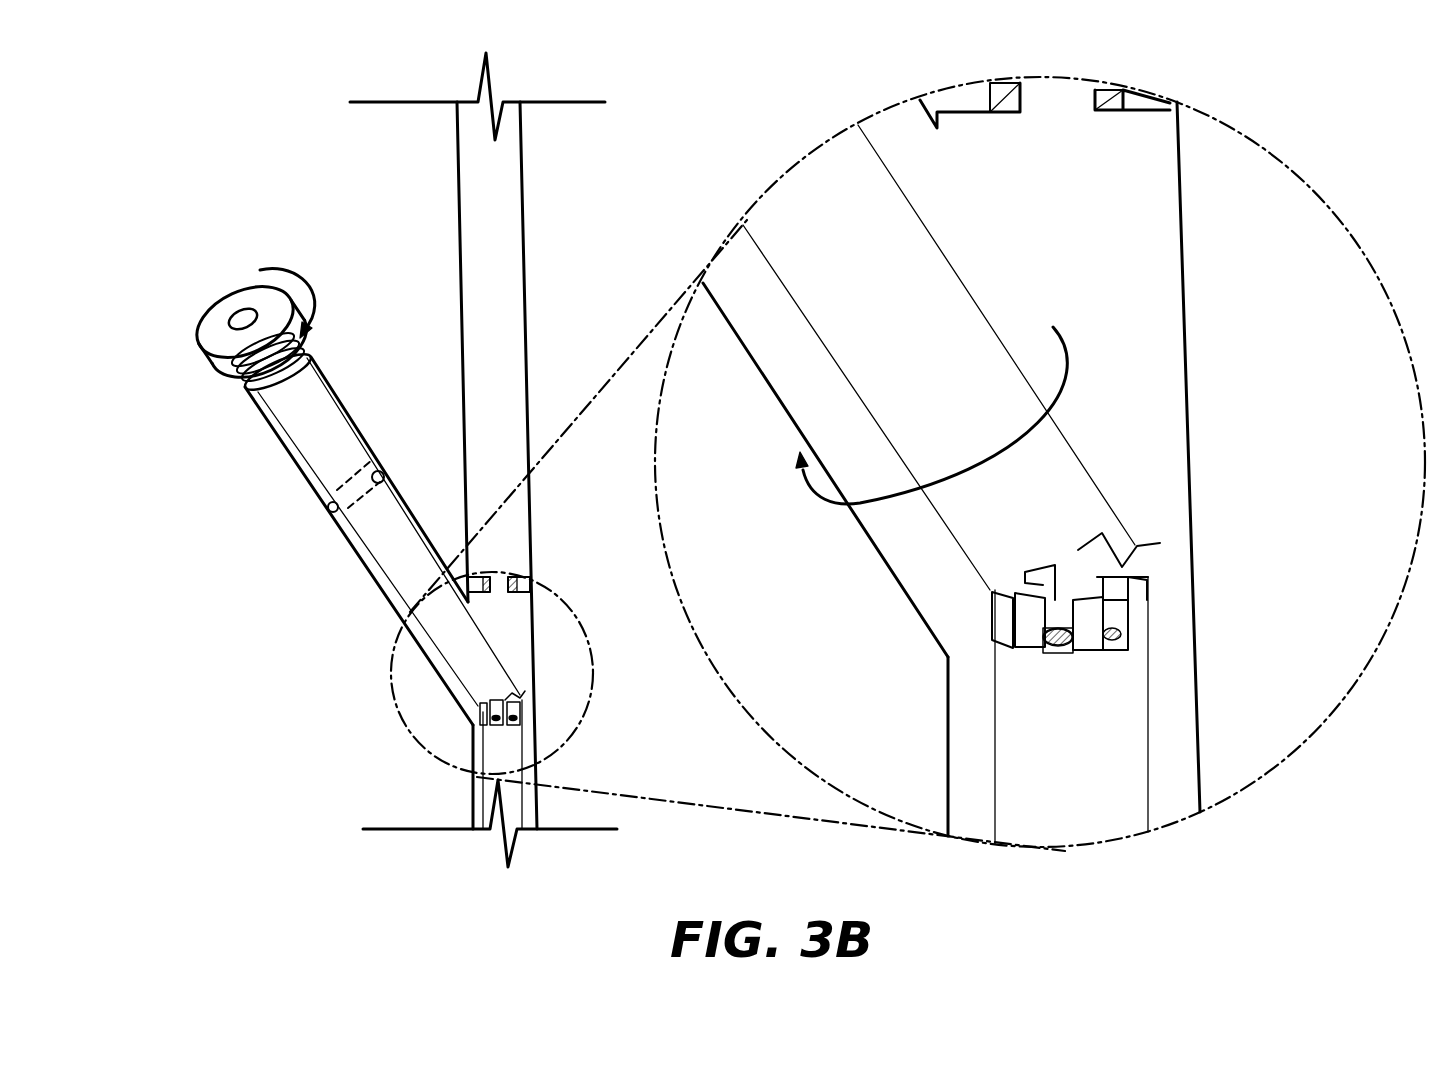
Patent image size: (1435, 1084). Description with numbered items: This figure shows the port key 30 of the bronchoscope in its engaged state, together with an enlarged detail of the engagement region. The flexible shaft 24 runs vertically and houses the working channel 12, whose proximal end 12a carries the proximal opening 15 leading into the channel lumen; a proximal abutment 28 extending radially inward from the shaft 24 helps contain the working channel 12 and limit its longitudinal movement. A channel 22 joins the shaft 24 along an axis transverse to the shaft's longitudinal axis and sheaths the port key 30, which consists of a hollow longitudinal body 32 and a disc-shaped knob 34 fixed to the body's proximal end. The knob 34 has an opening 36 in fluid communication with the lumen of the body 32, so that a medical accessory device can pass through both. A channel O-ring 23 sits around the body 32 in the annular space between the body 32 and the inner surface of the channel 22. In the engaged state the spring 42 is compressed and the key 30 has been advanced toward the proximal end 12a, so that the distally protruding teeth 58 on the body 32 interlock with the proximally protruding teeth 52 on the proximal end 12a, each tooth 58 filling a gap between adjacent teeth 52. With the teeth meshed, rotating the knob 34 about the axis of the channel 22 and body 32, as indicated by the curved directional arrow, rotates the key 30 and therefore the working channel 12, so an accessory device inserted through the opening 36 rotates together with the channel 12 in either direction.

The working channel 12 is at (518, 753).
The proximal end 12a is at (527, 710).
The proximal opening 15 is at (1055, 645).
The channel 22 is at (290, 462).
The channel O-ring 23 is at (381, 471).
The flexible shaft 24 is at (505, 328).
The proximal abutment 28 is at (527, 583).
The port key 30 is at (230, 228).
The longitudinal body 32 is at (258, 378).
The knob 34 is at (215, 339).
The opening 36 is at (235, 316).
The spring 42 is at (298, 352).
The teeth 52 is at (1148, 600).
The teeth 58 is at (1135, 546).